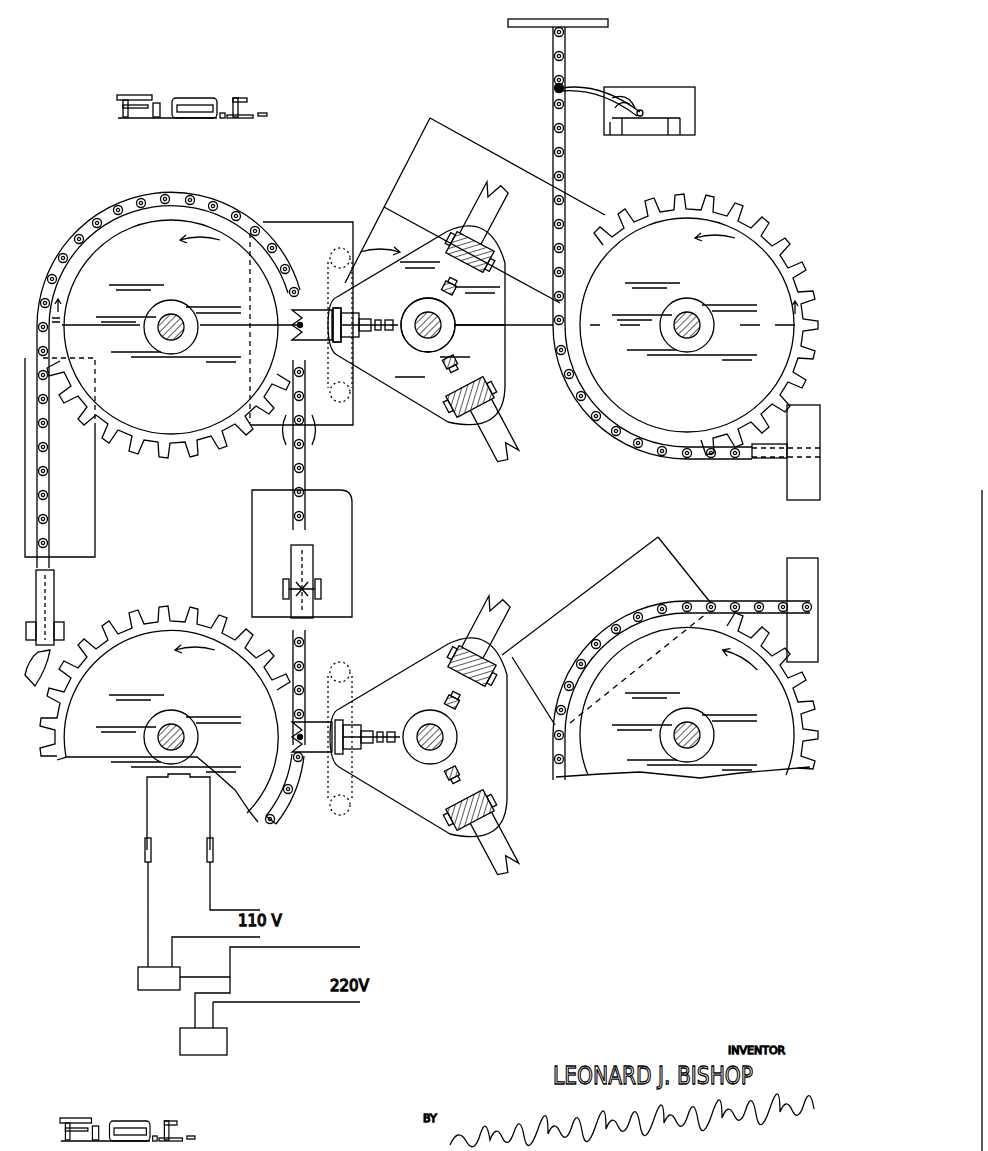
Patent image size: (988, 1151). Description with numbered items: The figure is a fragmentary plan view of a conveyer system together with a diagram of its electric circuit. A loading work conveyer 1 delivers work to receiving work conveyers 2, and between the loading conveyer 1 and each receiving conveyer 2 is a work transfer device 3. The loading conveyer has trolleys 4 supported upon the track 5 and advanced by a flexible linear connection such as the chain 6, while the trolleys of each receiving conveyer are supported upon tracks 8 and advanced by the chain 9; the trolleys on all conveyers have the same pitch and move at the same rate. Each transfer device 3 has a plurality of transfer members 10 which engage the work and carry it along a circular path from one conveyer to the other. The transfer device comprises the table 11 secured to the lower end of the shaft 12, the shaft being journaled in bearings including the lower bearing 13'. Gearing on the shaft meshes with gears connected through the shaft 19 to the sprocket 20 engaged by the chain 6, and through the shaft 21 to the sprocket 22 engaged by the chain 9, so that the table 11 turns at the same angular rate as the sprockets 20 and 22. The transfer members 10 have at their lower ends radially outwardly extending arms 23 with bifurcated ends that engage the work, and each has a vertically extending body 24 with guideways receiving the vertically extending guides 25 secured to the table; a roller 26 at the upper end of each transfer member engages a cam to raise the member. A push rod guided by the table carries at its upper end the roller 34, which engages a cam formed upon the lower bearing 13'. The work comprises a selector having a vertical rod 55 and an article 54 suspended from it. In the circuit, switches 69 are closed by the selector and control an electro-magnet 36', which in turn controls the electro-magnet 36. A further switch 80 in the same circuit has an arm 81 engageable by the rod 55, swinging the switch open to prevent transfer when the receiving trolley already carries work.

In FIG. 1, the loading work conveyer 1 is at (173, 335).
In FIG. 1, the receiving work conveyers 2 is at (699, 302).
In FIG. 1, the work transfer devices 3 is at (440, 324).
In FIG. 1, the trolleys of the loading conveyer 4 is at (321, 593).
In FIG. 1, the track 5 is at (313, 565).
In FIG. 1, the chain 6 is at (372, 507).
In FIG. 1, the tracks 8 is at (772, 458).
In FIG. 1, the chain 9 is at (553, 136).
In FIG. 1, the transfer members 10 is at (305, 330).
In FIG. 1, the table 11 is at (425, 398).
In FIG. 2, the table 11 is at (432, 670).
In FIG. 1, the shaft 12 is at (428, 339).
In FIG. 2, the shaft 12 is at (428, 730).
In FIG. 1, the lower bearing 13' is at (444, 325).
In FIG. 1, the shaft 19 is at (178, 342).
In FIG. 1, the sprocket 20 is at (192, 442).
In FIG. 1, the shaft 21 is at (700, 322).
In FIG. 1, the sprocket 22 is at (722, 200).
In FIG. 1, the radially outwardly extending arms 23 is at (352, 278).
In FIG. 1, the vertically extending body 24 is at (482, 383).
In FIG. 1, the vertically extending guides 25 is at (458, 412).
In FIG. 1, the roller 26 is at (343, 310).
In FIG. 1, the roller 34 is at (388, 318).
In FIG. 2, the roller 34 is at (389, 732).
In FIG. 1, the article 54 is at (88, 540).
In FIG. 1, the vertical rod 55 is at (554, 88).
In FIG. 2, the switch 69 is at (144, 853).
In FIG. 2, the electro-magnet 36 is at (222, 1041).
In FIG. 2, the electro-magnet 36' is at (158, 996).
In FIG. 1, the switch 80 is at (620, 86).
In FIG. 2, the switch 80 is at (178, 812).
In FIG. 1, the arm 81 is at (583, 84).